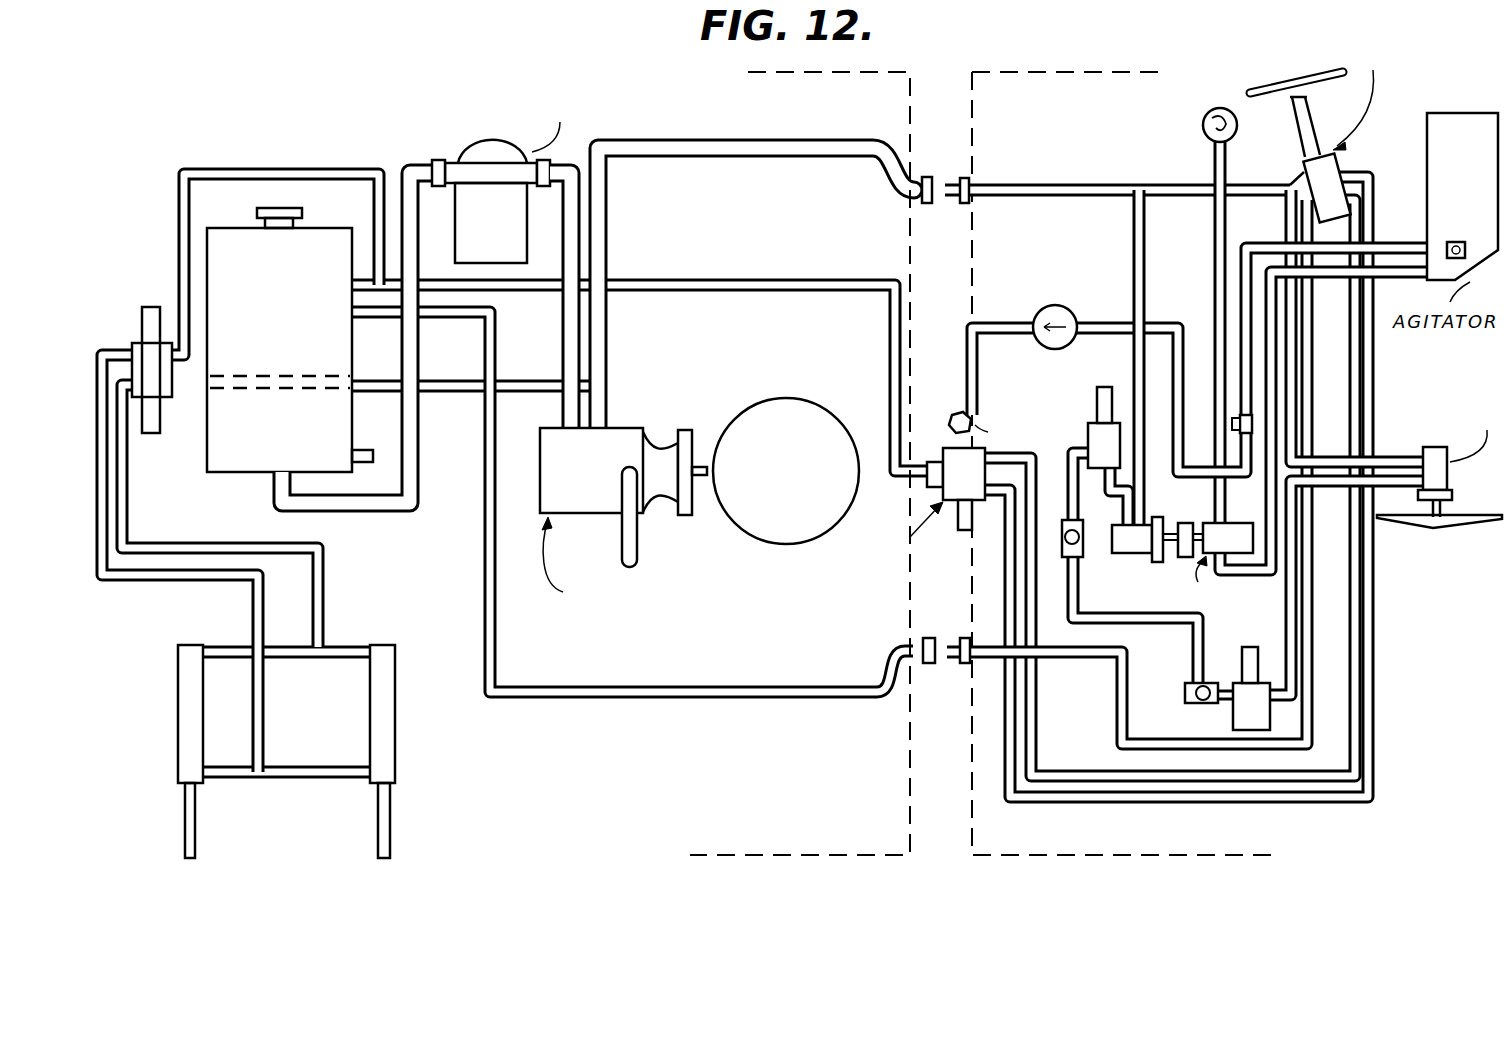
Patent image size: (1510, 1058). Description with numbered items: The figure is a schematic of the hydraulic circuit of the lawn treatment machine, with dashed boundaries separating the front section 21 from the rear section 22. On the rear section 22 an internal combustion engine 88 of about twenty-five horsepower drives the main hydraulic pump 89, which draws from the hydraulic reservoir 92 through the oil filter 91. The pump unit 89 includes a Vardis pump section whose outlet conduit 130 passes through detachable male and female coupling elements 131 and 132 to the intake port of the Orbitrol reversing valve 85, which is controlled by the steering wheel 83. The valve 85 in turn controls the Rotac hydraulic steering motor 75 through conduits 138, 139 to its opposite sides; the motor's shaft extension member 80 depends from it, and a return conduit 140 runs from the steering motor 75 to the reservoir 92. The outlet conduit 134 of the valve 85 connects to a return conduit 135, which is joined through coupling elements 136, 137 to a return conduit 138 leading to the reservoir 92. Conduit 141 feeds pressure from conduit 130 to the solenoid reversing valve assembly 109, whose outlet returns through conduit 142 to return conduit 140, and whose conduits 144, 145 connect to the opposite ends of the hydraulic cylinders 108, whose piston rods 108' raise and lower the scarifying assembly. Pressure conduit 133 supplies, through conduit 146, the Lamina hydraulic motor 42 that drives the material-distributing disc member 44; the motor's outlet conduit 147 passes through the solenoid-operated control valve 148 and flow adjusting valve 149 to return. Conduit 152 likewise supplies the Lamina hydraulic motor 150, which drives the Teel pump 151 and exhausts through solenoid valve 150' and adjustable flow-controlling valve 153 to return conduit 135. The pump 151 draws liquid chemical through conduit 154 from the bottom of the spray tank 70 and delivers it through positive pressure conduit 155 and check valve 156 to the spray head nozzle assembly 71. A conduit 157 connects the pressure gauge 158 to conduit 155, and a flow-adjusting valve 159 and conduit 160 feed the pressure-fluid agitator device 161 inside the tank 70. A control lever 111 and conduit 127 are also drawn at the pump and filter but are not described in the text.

The front section 21 is at (968, 95).
The rear section 22 is at (910, 93).
The hydraulic motor 42 is at (1452, 477).
The material-distributing disc member 44 is at (1502, 520).
The tank 70 is at (1445, 110).
The nozzle assembly 71 is at (955, 414).
The hydraulic steering motor 75 is at (948, 458).
The vertical shaft extension member 80 is at (965, 533).
The steering wheel 83 is at (1243, 92).
The reversing valve 85 is at (1338, 165).
The internal combustion engine 88 is at (750, 400).
The main hydraulic pump 89 is at (570, 515).
The oil filter 91 is at (517, 247).
The hydraulic reservoir 92 is at (325, 230).
The hydraulic cylinders 108 is at (298, 782).
The piston rods 108' is at (320, 823).
The solenoid reversing valve assembly 109 is at (151, 435).
The pump control lever 111 is at (640, 552).
The filter outlet line 127 is at (565, 322).
The outlet conduit 130 is at (607, 415).
The male coupling element 131 is at (963, 177).
The female coupling element 132 is at (927, 175).
The pressure conduit 133 is at (1110, 182).
The outlet conduit 134 is at (1306, 380).
The return conduit 135 is at (1065, 660).
The male coupling element 136 is at (975, 623).
The female coupling element 137 is at (930, 637).
The return conduit 138 is at (640, 688).
The conduit 139 is at (1352, 408).
The return conduit 140 is at (722, 290).
The conduit 141 is at (503, 393).
The conduit 142 is at (258, 172).
The pressure fluid conduit 144 is at (188, 553).
The fluid-returning conduit 145 is at (152, 580).
The conduit 146 is at (1287, 231).
The conduit 147 is at (1332, 488).
The solenoid-operated control valve 148 is at (1233, 708).
The flow adjusting valve 149 is at (1210, 678).
The hydraulic motor 150 is at (1144, 544).
The solenoid valve 150' is at (1089, 450).
The Teel pump 151 is at (1248, 515).
The conduit 152 is at (1137, 247).
The adjustable flow-controlling valve 153 is at (1058, 560).
The conduit 154 is at (1393, 280).
The positive pressure conduit 155 is at (1175, 325).
The check valve 156 is at (1040, 310).
The conduit 157 is at (1215, 240).
The pressure gauge 158 is at (1203, 125).
The flow-adjusting valve 159 is at (1233, 423).
The conduit 160 is at (1393, 247).
The pressure-fluid agitator device 161 is at (1456, 242).